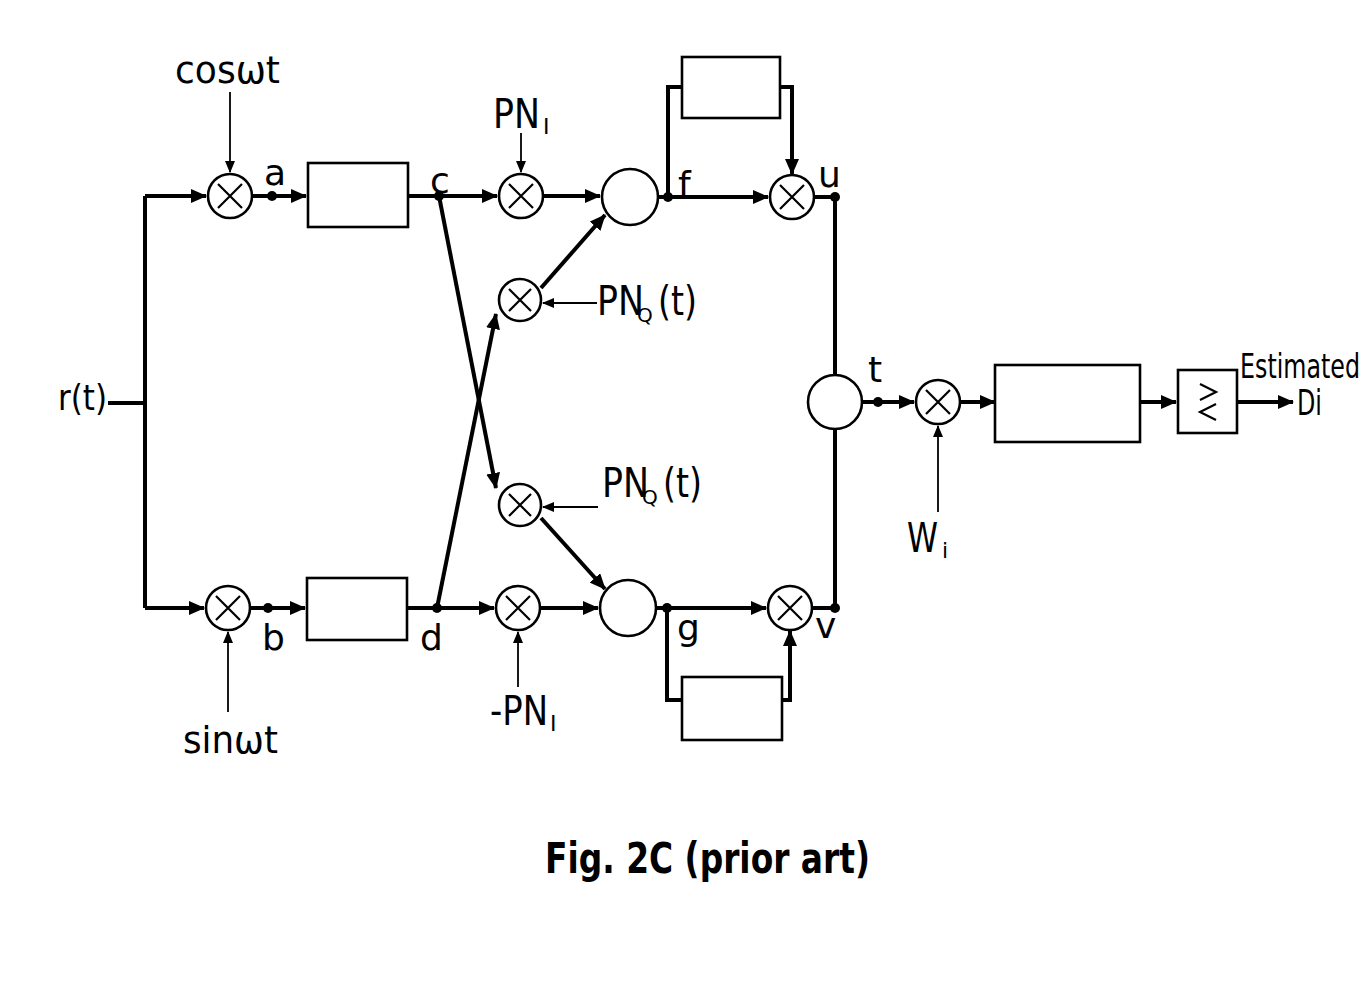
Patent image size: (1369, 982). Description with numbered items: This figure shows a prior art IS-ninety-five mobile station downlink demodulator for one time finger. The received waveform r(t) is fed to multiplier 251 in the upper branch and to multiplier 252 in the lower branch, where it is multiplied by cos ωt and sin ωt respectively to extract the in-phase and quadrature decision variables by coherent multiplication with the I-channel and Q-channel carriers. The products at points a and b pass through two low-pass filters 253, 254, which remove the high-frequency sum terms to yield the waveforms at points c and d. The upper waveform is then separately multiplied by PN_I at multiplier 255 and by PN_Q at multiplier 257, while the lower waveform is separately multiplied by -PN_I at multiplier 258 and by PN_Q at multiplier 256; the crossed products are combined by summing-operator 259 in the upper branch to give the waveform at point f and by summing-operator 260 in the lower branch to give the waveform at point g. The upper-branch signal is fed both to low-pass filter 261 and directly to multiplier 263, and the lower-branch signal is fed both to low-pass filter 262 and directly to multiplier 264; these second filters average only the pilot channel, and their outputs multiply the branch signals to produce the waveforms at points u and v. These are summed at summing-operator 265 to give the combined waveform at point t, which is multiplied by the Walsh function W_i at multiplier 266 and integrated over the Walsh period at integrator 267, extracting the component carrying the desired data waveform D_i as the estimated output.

The multiplier 251 is at (232, 218).
The multiplier 252 is at (218, 586).
The low-pass filter (LPF1) 253 is at (360, 228).
The low-pass filter (LPF1) 254 is at (337, 578).
The multiplier 255 is at (538, 173).
The multiplier 256 is at (525, 321).
The multiplier 257 is at (535, 489).
The multiplier 258 is at (535, 628).
The summing-operator 259 is at (643, 224).
The summing-operator 260 is at (645, 583).
The low-pass filter (LPF2) 261 is at (780, 75).
The low-pass filter (LPF2) 262 is at (782, 725).
The multiplier 263 is at (808, 168).
The multiplier 264 is at (797, 586).
The summing-operator 265 is at (810, 413).
The multiplier 266 is at (937, 378).
The integrator 267 is at (1047, 442).